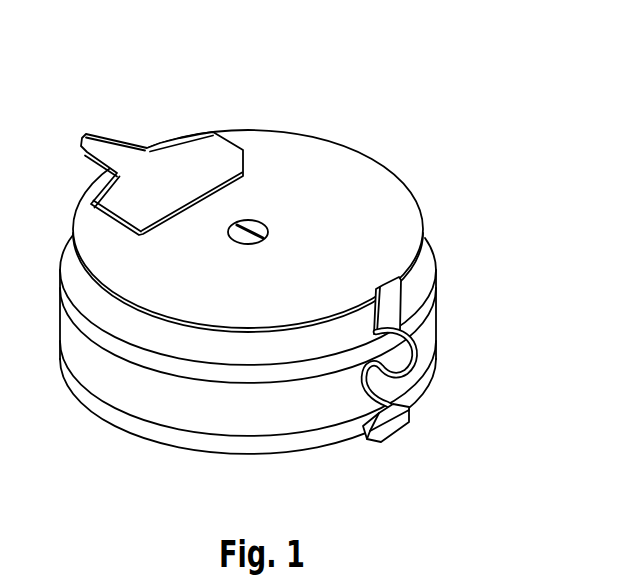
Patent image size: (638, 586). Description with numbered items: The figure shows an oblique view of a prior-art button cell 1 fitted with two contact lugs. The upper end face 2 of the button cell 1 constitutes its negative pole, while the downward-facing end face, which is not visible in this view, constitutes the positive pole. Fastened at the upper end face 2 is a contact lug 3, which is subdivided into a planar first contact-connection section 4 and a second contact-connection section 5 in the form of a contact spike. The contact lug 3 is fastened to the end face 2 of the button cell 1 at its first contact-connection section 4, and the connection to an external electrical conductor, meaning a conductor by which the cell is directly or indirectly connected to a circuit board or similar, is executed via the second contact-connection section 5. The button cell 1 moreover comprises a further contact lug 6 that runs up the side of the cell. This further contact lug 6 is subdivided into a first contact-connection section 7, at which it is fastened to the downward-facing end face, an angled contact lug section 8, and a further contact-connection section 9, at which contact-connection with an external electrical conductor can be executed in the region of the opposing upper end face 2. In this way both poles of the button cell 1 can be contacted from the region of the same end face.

The button cell 1 is at (296, 263).
The upper end face 2 is at (287, 162).
The contact lug 3 is at (162, 138).
The first contact-connection section 4 is at (214, 162).
The second contact-connection section 5 is at (105, 146).
The further contact lug 6 is at (452, 326).
The first contact-connection section 7 is at (362, 440).
The angled contact lug section 8 is at (413, 365).
The further contact-connection section 9 is at (393, 298).